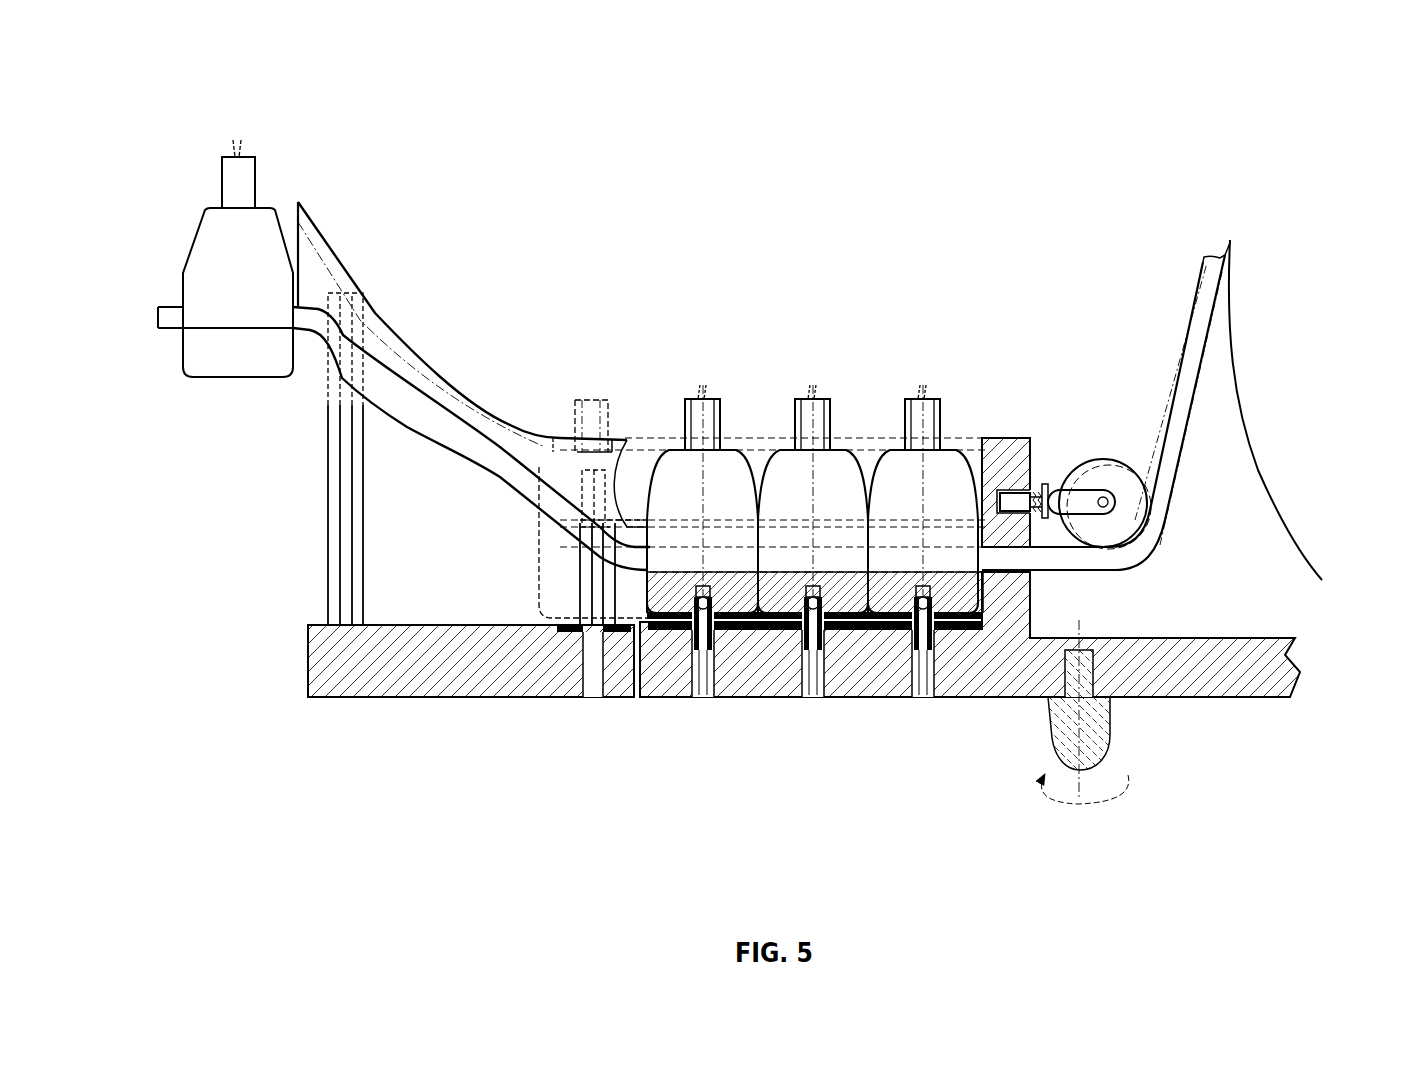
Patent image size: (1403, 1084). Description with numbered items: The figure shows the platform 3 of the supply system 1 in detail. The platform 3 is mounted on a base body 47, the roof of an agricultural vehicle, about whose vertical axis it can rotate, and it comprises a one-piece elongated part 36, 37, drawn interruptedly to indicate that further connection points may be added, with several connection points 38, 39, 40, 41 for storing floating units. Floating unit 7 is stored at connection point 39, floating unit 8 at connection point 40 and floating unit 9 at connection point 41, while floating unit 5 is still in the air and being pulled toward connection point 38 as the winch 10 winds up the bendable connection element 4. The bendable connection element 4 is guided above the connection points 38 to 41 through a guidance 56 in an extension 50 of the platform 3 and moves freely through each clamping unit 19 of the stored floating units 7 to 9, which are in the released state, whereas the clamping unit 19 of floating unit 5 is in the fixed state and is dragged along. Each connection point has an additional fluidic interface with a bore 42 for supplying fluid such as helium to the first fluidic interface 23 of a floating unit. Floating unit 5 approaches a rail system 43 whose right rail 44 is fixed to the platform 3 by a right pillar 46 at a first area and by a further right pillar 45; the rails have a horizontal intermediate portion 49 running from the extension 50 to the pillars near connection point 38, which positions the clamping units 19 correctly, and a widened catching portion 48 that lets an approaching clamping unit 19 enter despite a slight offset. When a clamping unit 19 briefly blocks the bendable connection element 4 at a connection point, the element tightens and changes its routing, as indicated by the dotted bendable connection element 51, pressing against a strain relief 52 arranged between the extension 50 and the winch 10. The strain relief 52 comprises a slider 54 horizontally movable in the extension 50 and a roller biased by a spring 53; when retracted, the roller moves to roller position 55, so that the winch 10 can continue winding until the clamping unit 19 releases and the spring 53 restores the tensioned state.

The supply system 1 is at (942, 230).
The platform 3 is at (1277, 677).
The bendable connection element 4 is at (453, 427).
The floating unit 5 is at (172, 200).
The floating unit 7 is at (683, 357).
The floating unit 8 is at (787, 357).
The floating unit 9 is at (873, 357).
The winch 10 is at (1260, 476).
The clamping unit 19 is at (262, 253).
The first fluidic interface 23 is at (733, 601).
The elongated part 36 is at (1193, 680).
The elongated part 37 is at (562, 680).
The connection point 38 is at (620, 662).
The connection point 39 is at (728, 662).
The connection point 40 is at (838, 662).
The connection point 41 is at (948, 662).
The bore 42 is at (593, 688).
The rail system 43 is at (417, 318).
The right rail 44 is at (437, 445).
The right pillar 45 is at (343, 465).
The right pillar 46 is at (600, 575).
The base body 47 is at (1107, 720).
The catching portion 48 is at (325, 282).
The intermediate portion 49 is at (640, 465).
The extension 50 is at (997, 440).
The dotted bendable connection element 51 is at (1147, 450).
The strain relief 52 is at (1132, 503).
The spring 53 is at (1013, 502).
The slider 54 is at (1013, 490).
The roller position 55 is at (1083, 460).
The guidance 56 is at (1015, 540).